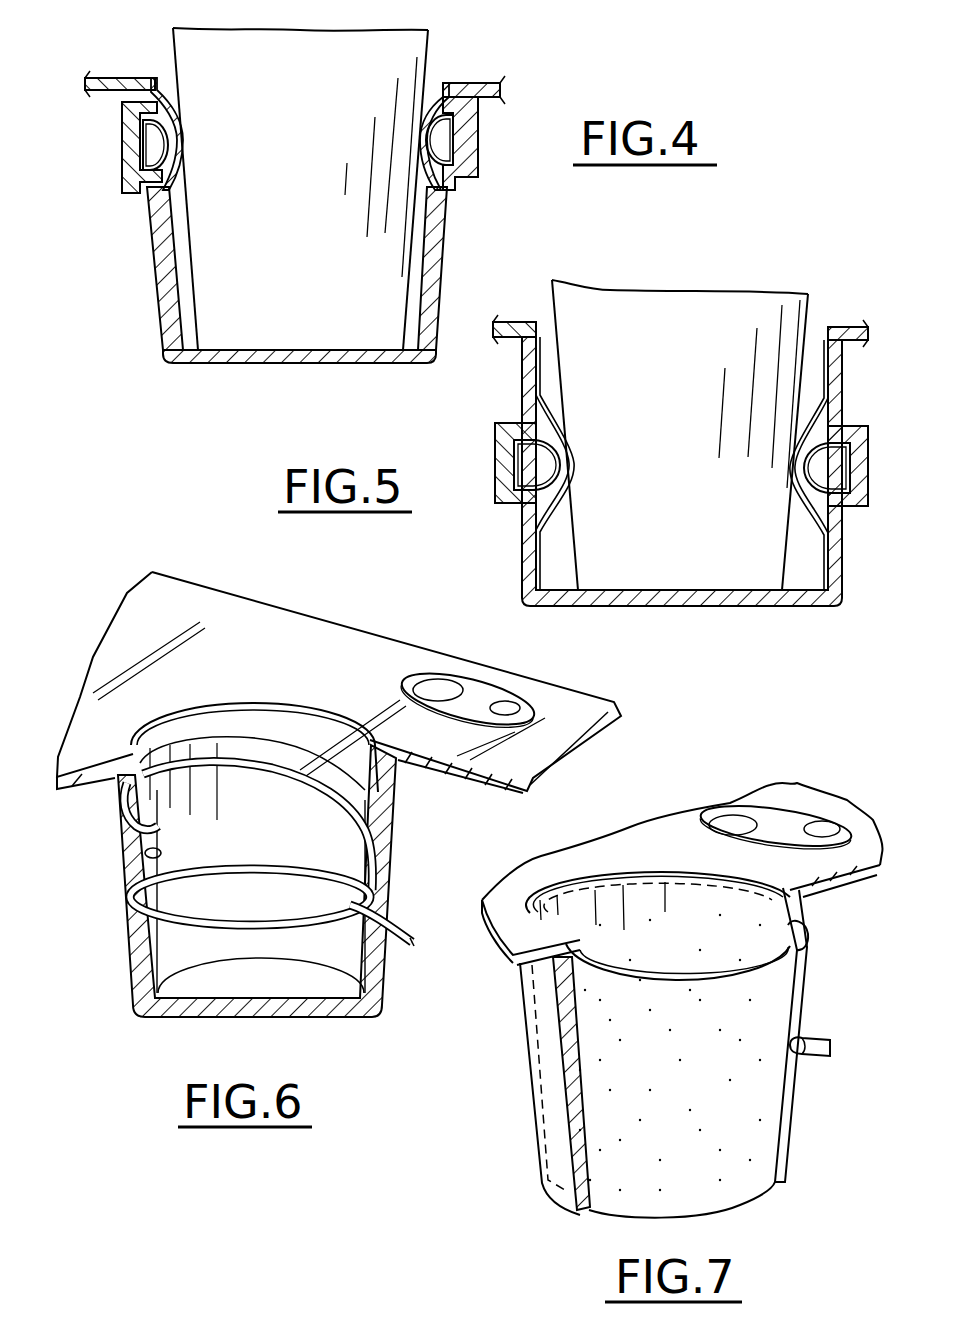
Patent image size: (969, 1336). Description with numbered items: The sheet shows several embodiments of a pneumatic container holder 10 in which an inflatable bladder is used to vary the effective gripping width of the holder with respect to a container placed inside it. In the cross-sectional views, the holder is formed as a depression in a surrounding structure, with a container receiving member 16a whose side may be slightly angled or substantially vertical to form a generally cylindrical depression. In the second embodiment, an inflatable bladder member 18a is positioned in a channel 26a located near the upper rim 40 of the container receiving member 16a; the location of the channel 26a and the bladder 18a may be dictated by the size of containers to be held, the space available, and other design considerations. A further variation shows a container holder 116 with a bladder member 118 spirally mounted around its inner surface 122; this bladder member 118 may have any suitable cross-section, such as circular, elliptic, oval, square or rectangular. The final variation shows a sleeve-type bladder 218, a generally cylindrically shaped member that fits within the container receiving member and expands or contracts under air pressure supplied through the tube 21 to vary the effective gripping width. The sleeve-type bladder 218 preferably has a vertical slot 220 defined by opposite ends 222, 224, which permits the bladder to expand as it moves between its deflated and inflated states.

In FIG. 4, the pneumatic container holder 10 is at (331, 376).
In FIG. 4, the container receiving member 16a is at (180, 360).
In FIG. 4, the inflatable bladder member 18a is at (131, 170).
In FIG. 4, the channel 26a is at (131, 138).
In FIG. 4, the upper rim 40 is at (168, 80).
In FIG. 6, the container holder 116 is at (144, 1017).
In FIG. 6, the bladder member 118 is at (128, 905).
In FIG. 6, the inner surface 122 is at (125, 856).
In FIG. 7, the tube 21 is at (815, 1043).
In FIG. 7, the sleeve-type bladder 218 is at (595, 1128).
In FIG. 7, the vertical slot 220 is at (775, 1182).
In FIG. 7, the opposite end 222 is at (801, 951).
In FIG. 7, the opposite end 224 is at (805, 950).